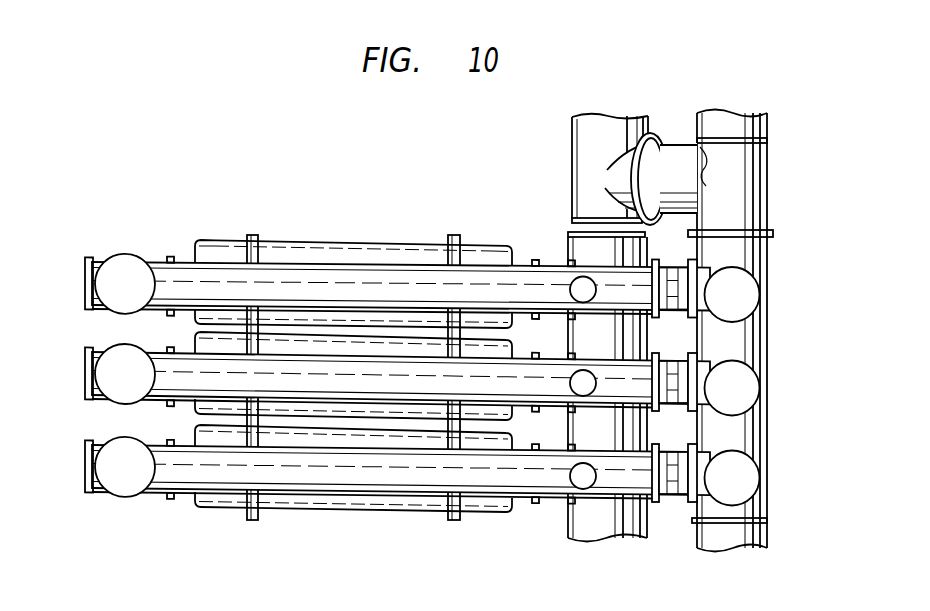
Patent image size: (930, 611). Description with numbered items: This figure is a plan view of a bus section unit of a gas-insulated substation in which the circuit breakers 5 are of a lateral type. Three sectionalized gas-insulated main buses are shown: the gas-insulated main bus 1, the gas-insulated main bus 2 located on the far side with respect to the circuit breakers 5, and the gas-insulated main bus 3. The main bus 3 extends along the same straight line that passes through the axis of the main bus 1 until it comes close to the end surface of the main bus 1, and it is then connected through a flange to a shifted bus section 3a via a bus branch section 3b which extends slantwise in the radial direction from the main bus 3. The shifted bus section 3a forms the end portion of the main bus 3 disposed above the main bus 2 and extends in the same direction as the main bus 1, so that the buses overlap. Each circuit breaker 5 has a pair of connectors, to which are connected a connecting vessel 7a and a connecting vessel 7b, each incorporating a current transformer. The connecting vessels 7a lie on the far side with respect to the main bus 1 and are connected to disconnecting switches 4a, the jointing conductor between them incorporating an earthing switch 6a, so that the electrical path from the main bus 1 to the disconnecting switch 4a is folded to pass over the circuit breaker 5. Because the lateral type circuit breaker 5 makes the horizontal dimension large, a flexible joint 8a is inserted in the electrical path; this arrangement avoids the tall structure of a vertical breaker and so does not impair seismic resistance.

The gas-insulated main bus 1 is at (568, 535).
The gas-insulated main bus 2 is at (757, 119).
The gas-insulated main bus 3 is at (570, 169).
The shifted bus section 3a is at (762, 340).
The bus branch section 3b is at (682, 142).
The disconnecting switch 4a is at (745, 270).
The circuit breaker 5 is at (346, 250).
The earthing switch 6a is at (573, 280).
The connecting vessel 7a is at (208, 242).
The connecting vessel 7b is at (480, 254).
The flexible joint 8a is at (676, 498).